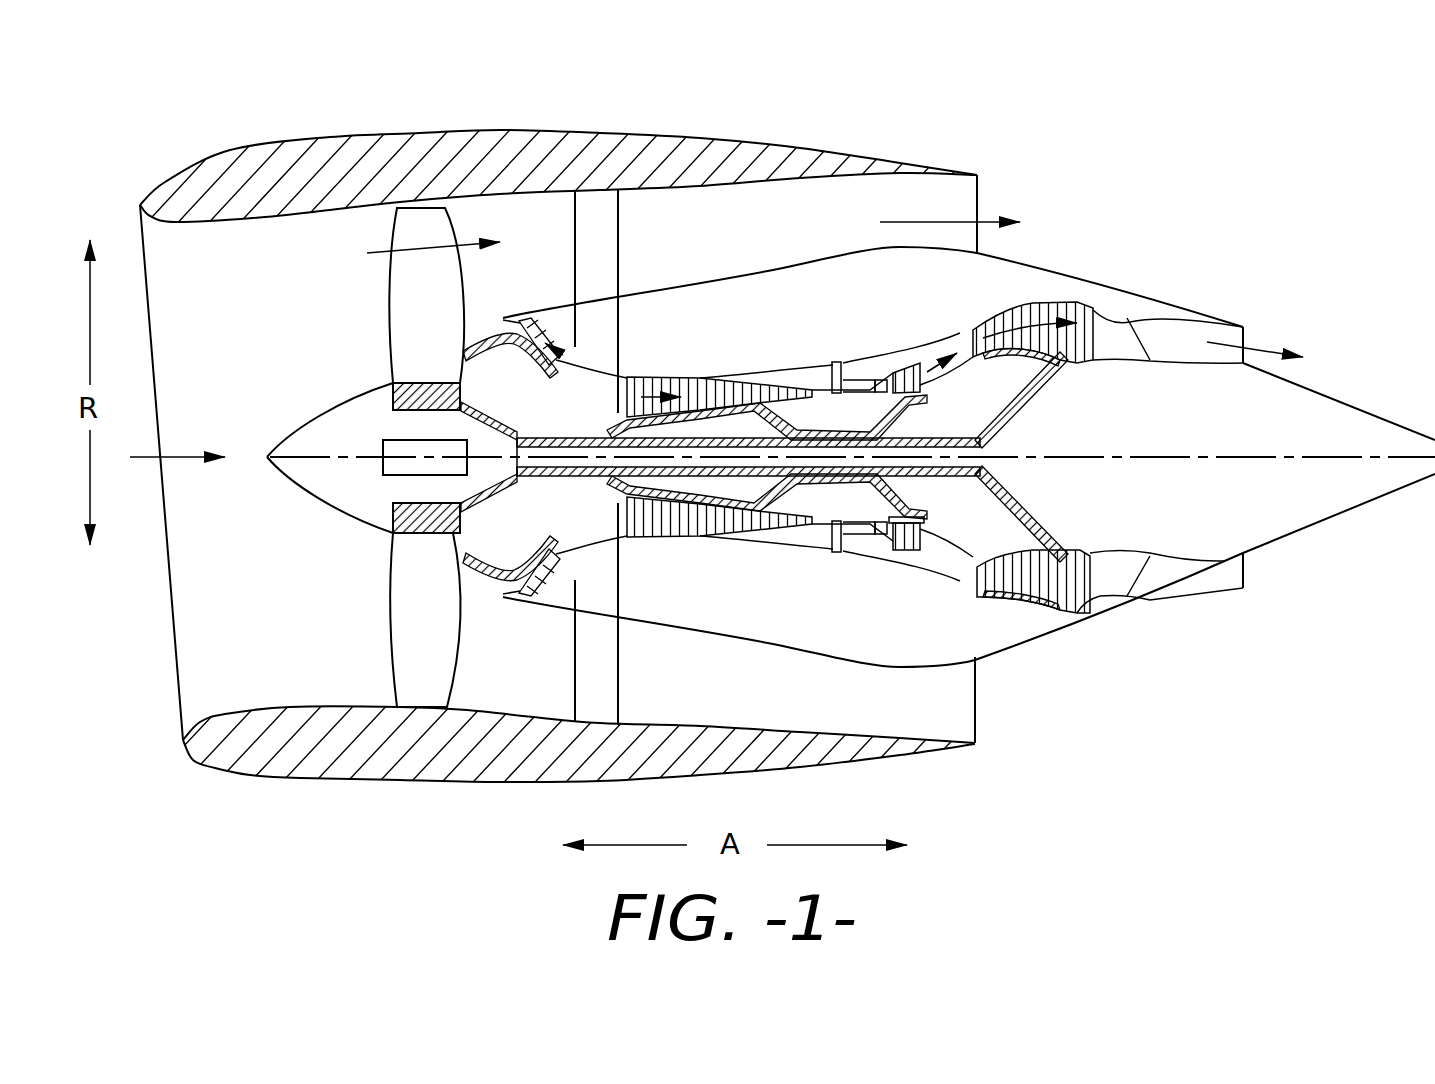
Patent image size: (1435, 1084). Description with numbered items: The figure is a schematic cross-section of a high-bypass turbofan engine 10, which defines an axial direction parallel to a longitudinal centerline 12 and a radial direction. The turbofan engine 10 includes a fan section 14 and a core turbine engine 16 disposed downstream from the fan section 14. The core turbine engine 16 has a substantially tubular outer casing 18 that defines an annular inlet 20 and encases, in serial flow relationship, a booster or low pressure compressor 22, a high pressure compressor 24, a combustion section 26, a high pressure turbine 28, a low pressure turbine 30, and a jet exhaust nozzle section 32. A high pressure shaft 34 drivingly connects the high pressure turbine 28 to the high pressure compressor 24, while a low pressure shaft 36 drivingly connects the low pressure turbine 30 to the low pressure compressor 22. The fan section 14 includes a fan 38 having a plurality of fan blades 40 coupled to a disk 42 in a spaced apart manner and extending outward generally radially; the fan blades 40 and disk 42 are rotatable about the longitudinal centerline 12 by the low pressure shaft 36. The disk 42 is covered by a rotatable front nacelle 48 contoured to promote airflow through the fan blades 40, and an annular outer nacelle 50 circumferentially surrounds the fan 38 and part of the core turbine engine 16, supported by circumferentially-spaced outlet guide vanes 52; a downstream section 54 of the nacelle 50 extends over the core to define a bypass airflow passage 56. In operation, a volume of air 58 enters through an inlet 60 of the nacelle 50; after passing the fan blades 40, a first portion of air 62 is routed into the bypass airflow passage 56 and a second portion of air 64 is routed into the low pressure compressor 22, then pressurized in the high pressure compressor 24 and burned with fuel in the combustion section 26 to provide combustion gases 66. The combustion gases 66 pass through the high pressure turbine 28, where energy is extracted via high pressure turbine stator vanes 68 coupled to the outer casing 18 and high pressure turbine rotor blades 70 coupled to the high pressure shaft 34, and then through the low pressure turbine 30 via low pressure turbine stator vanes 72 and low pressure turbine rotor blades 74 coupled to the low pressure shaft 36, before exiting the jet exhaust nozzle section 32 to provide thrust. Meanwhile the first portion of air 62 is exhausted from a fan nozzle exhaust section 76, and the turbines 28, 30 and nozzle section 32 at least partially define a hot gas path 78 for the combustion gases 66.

The turbofan engine 10 is at (1233, 203).
The longitudinal centerline 12 is at (1153, 455).
The fan section 14 is at (476, 117).
The core turbine engine 16 is at (793, 327).
The outer casing 18 is at (817, 660).
The annular inlet 20 is at (513, 583).
The low pressure compressor 22 is at (572, 556).
The high pressure compressor 24 is at (652, 534).
The combustion section 26 is at (853, 541).
The high pressure turbine 28 is at (937, 540).
The low pressure turbine 30 is at (1078, 613).
The jet exhaust nozzle section 32 is at (1247, 333).
The high pressure shaft 34 is at (903, 405).
The low pressure shaft 36 is at (577, 450).
The fan 38 is at (377, 297).
The fan blades 40 is at (390, 650).
The disk 42 is at (390, 393).
The front nacelle 48 is at (313, 427).
The outer nacelle 50 is at (460, 783).
The outlet guide vanes 52 is at (620, 217).
The downstream section of the nacelle 54 is at (785, 142).
The bypass airflow passage 56 is at (738, 239).
The volume of air 58 is at (173, 457).
The inlet 60 is at (180, 693).
The first portion of air 62 is at (403, 247).
The second portion of air 64 is at (483, 328).
The combustion gases 66 is at (907, 360).
The HP turbine stator vanes 68 is at (893, 541).
The HP turbine rotor blades 70 is at (907, 541).
The LP turbine stator vanes 72 is at (983, 580).
The LP turbine rotor blades 74 is at (997, 593).
The fan nozzle exhaust section 76 is at (980, 198).
The hot gas path 78 is at (967, 337).